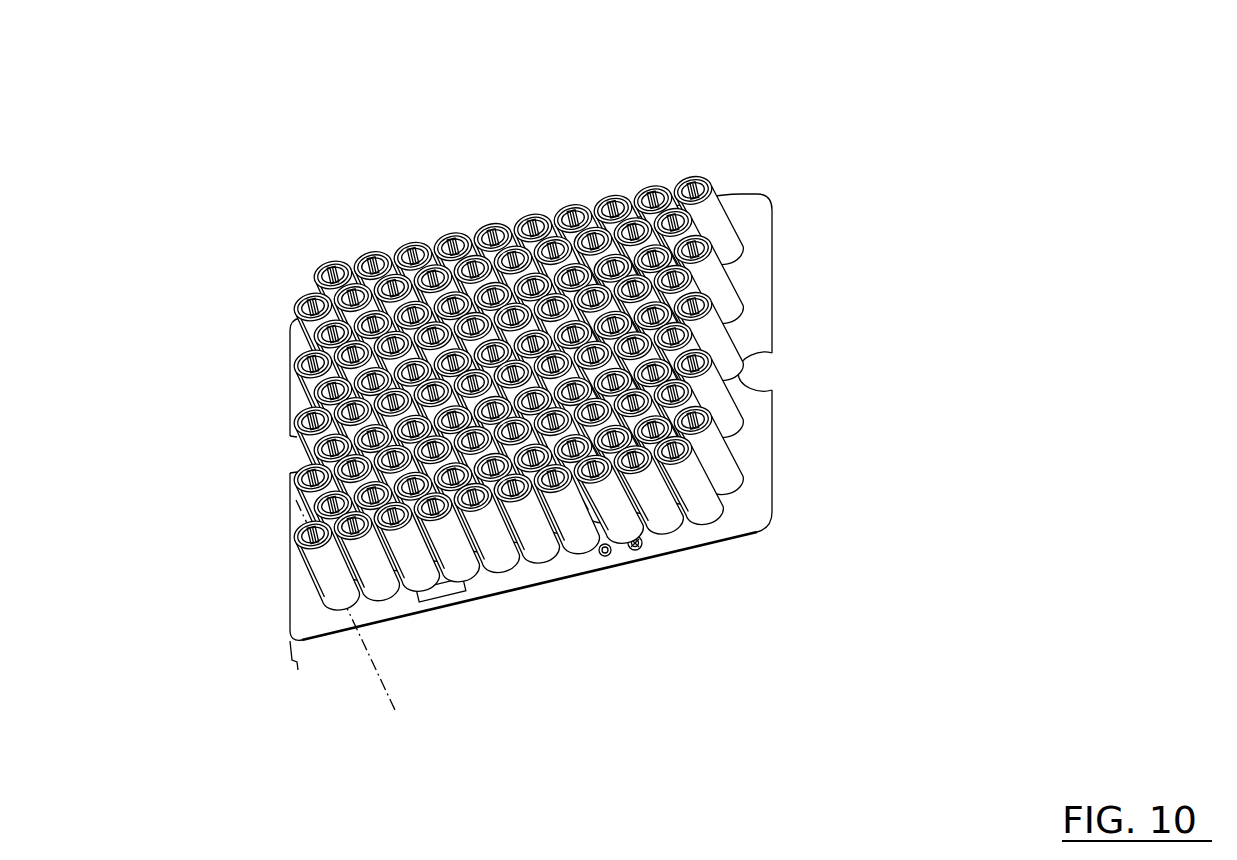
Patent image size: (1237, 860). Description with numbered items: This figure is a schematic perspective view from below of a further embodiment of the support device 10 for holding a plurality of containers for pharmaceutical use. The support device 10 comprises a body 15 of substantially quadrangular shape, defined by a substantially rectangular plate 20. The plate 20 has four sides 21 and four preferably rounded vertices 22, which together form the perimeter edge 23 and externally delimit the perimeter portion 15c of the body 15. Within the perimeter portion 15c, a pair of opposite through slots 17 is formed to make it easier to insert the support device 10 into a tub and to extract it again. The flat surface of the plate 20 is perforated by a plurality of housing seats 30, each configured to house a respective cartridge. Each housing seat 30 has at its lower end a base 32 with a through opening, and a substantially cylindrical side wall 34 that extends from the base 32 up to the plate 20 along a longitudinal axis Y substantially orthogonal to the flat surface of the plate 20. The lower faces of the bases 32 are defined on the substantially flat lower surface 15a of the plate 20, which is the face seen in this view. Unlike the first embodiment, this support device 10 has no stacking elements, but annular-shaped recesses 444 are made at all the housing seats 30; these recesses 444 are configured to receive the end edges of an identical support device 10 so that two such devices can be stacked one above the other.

The support device 10 is at (587, 402).
The body 15 is at (545, 416).
The lower surface 15a is at (400, 250).
The perimeter portion 15c is at (743, 497).
The through slot 17 is at (757, 382).
The plate 20 is at (775, 258).
The side 21 is at (775, 437).
The vertex 22 is at (772, 200).
The perimeter edge 23 is at (632, 563).
The housing seat 30 is at (500, 223).
The base 32 is at (295, 417).
The side wall 34 is at (312, 566).
The annular-shaped recess 444 is at (434, 367).
The longitudinal axis Y is at (392, 697).